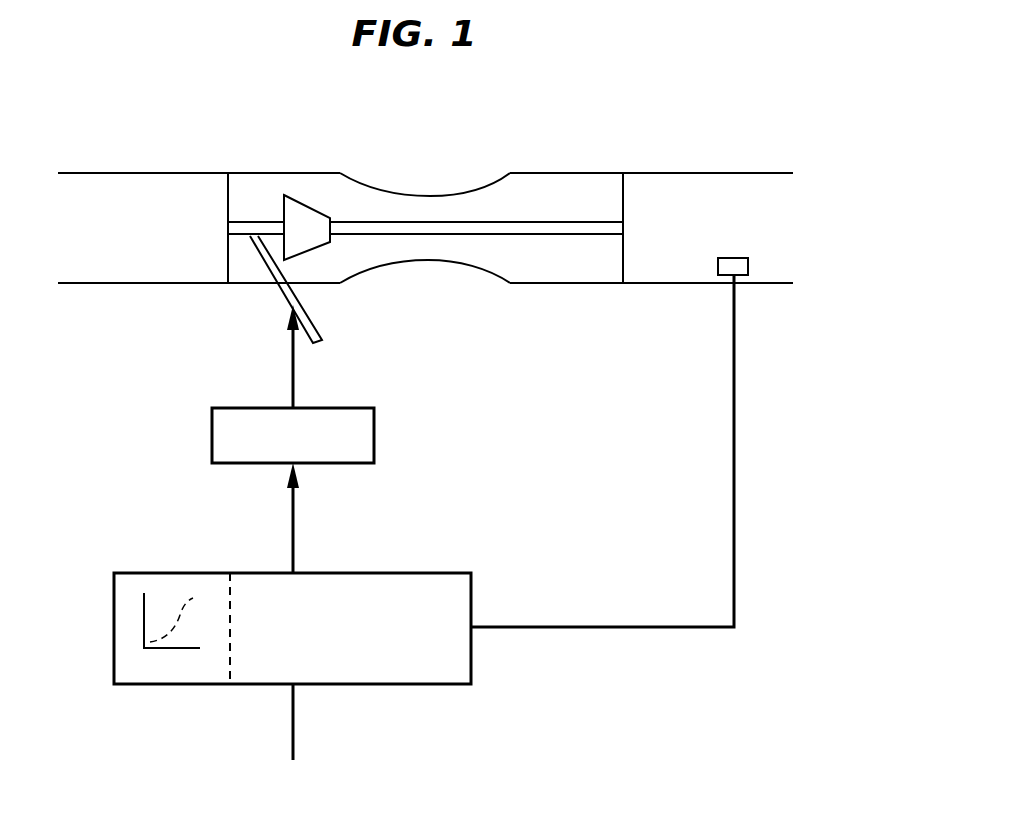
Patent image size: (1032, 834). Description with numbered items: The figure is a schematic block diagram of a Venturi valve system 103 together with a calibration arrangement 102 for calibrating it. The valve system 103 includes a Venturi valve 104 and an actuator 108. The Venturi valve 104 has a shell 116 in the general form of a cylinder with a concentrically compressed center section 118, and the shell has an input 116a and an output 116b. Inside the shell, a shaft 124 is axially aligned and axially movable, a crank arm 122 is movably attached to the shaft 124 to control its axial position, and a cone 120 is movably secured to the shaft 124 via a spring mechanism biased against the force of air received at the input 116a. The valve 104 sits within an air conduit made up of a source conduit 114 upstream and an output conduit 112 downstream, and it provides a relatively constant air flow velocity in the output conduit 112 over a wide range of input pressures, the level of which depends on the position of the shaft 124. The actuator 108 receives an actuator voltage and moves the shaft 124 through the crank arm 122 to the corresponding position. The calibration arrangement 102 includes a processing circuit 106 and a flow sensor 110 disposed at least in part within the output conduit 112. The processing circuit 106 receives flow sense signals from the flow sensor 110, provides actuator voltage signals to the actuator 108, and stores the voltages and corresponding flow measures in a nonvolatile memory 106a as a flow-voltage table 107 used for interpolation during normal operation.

The calibration arrangement 102 is at (822, 512).
The Venturi valve system 103 is at (110, 349).
The Venturi valve 104 is at (528, 144).
The processing circuit 106 is at (180, 540).
The nonvolatile memory 106a is at (125, 593).
The flow-voltage table 107 is at (125, 644).
The actuator 108 is at (375, 433).
The flow sensor 110 is at (749, 266).
The output conduit 112 is at (732, 186).
The source conduit 114 is at (107, 187).
The shell 116 is at (316, 172).
The input 116a is at (227, 205).
The output 116b is at (625, 192).
The concentrically compressed center section 118 is at (423, 192).
The cone 120 is at (318, 247).
The crank arm 122 is at (280, 288).
The shaft 124 is at (247, 222).